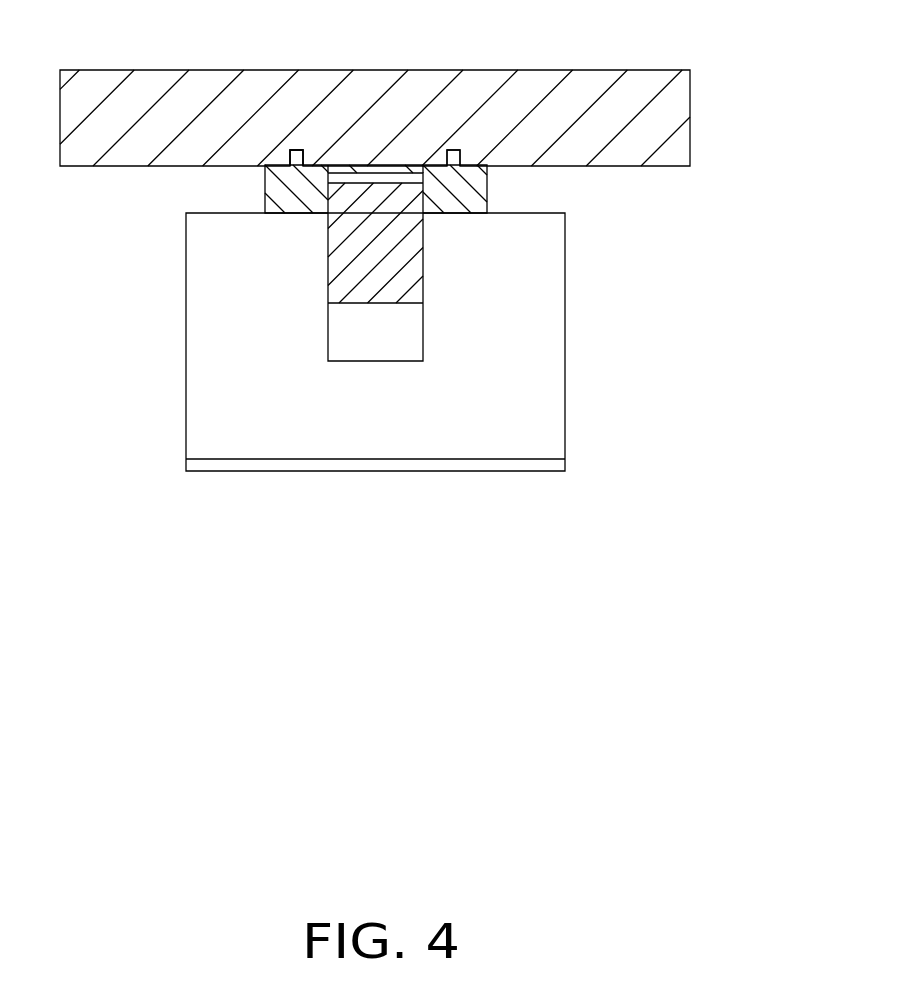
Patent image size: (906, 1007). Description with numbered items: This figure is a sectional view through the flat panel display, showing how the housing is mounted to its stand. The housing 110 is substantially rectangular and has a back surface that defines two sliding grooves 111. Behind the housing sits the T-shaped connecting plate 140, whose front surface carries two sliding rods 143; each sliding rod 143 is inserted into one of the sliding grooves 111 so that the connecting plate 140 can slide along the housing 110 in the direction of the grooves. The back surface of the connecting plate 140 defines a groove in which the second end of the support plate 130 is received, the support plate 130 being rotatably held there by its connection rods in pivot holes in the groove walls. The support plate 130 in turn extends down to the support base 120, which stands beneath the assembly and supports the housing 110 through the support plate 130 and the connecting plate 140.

The housing 110 is at (672, 120).
The sliding groove 111 is at (288, 150).
The sliding rod 143 is at (298, 157).
The connecting plate 140 is at (470, 190).
The support plate 130 is at (397, 285).
The support base 120 is at (532, 265).